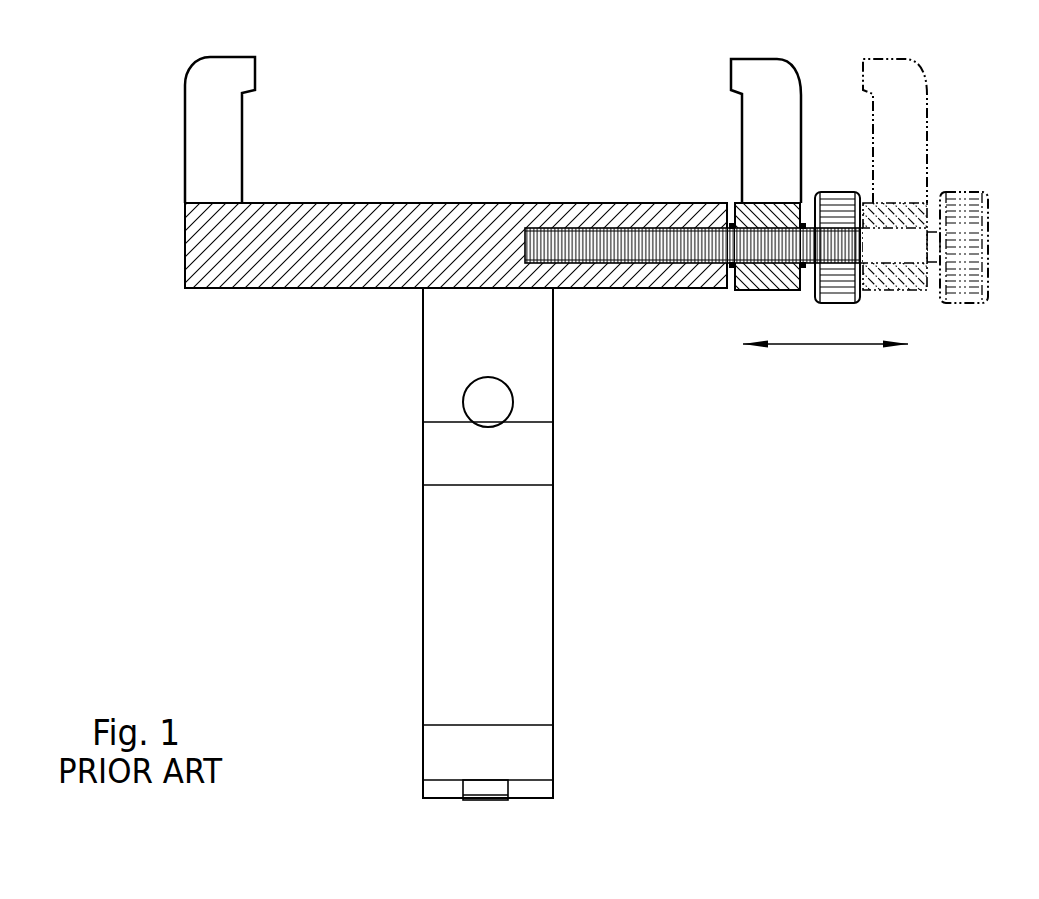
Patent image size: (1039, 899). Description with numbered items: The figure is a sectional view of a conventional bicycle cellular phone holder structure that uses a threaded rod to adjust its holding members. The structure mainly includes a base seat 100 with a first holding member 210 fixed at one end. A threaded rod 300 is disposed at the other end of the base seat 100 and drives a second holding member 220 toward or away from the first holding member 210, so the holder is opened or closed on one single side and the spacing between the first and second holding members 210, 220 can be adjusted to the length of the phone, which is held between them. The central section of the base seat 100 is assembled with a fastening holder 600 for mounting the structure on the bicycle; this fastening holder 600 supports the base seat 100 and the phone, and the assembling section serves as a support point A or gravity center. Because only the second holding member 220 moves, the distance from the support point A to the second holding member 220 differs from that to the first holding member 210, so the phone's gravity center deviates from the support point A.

The base seat 100 is at (312, 308).
The first holding member 210 is at (203, 82).
The second holding member 220 is at (770, 73).
The threaded rod 300 is at (628, 240).
The fastening holder 600 is at (606, 564).
The support point A is at (503, 305).